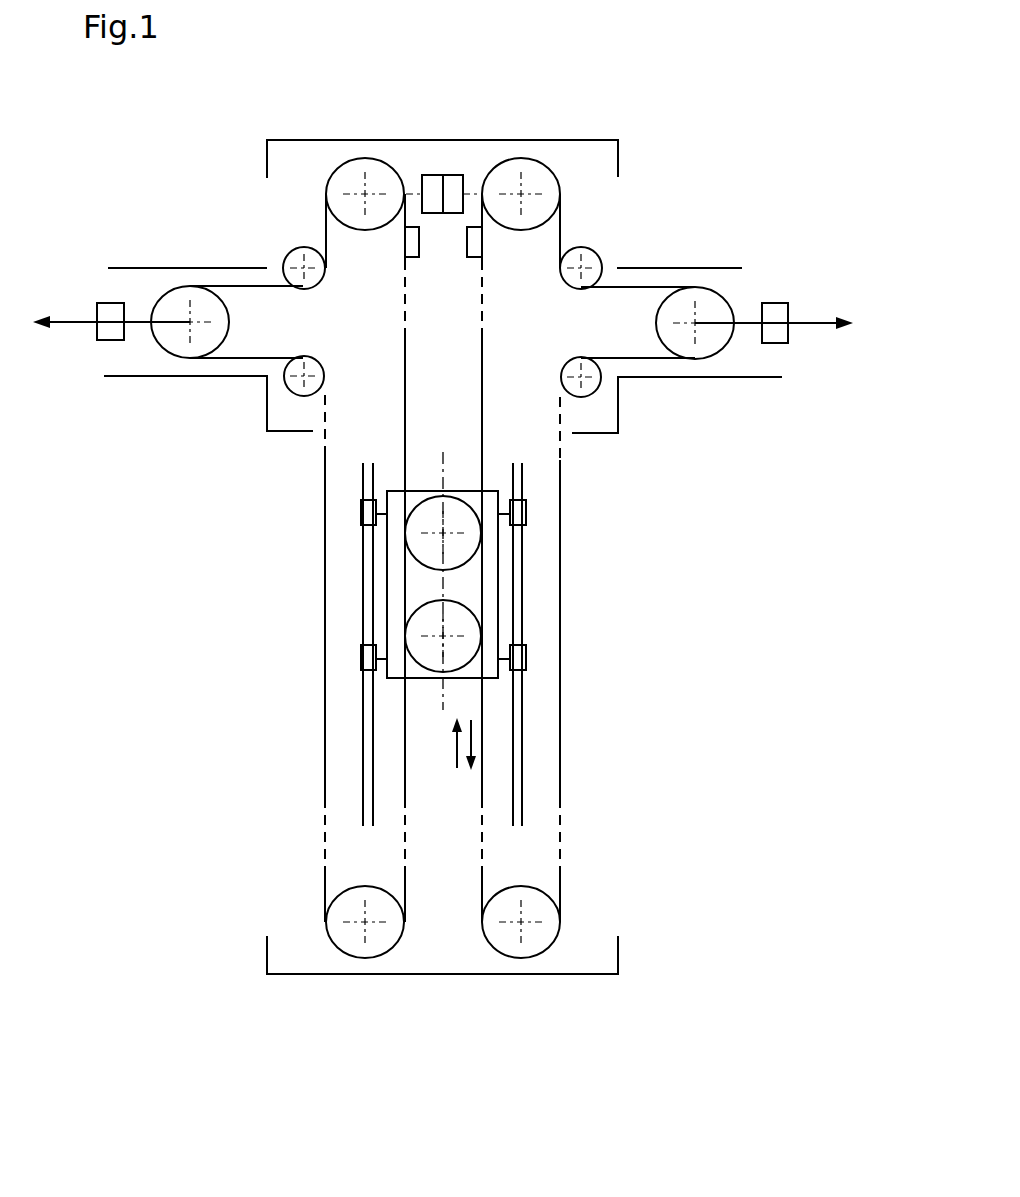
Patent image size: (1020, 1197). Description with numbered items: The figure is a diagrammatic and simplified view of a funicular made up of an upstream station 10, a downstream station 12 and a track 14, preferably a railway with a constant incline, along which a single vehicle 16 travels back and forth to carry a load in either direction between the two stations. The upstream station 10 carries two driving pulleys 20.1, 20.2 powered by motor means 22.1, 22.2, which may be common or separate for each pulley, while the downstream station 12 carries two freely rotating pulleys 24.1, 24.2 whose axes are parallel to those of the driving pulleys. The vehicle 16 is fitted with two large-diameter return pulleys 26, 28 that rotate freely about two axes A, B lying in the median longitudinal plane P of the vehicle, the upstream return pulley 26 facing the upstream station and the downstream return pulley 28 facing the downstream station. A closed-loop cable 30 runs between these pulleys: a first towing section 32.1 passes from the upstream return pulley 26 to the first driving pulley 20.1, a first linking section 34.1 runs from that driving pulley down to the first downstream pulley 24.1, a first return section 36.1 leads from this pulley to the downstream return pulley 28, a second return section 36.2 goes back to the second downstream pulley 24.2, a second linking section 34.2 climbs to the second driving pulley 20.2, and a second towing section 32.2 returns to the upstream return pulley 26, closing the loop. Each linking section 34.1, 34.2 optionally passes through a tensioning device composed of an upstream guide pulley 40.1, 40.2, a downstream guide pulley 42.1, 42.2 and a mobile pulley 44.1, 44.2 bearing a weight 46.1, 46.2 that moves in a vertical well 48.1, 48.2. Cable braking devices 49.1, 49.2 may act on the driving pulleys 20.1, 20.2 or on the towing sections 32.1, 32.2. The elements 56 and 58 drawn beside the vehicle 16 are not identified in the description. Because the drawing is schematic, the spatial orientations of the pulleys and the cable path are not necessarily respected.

The upstream station 10 is at (652, 140).
The downstream station 12 is at (620, 955).
The track 14 is at (436, 644).
The vehicle 16 is at (492, 630).
The first driving pulley 20.1 is at (537, 172).
The second driving pulley 20.2 is at (360, 172).
The motor means 22.1 is at (463, 173).
The motor means 22.2 is at (435, 175).
The first pulley of the downstream station 24.1 is at (523, 935).
The second pulley of the downstream station 24.2 is at (362, 938).
The upstream return pulley 26 is at (449, 537).
The downstream return pulley 28 is at (435, 627).
The closed-loop cable 30 is at (325, 226).
The first towing section 32.1 is at (482, 416).
The second towing section 32.2 is at (405, 432).
The first linking section 34.1 is at (562, 568).
The second linking section 34.2 is at (325, 710).
The first return section 36.1 is at (483, 708).
The second return section 36.2 is at (404, 739).
The upstream guide pulley 40.1 is at (587, 252).
The upstream guide pulley 40.2 is at (293, 265).
The downstream guide pulley 42.1 is at (587, 378).
The downstream guide pulley 42.2 is at (285, 389).
The mobile pulley 44.1 is at (707, 303).
The mobile pulley 44.2 is at (191, 355).
The weight 46.1 is at (786, 330).
The weight 46.2 is at (95, 303).
The vertical well 48.1 is at (708, 268).
The vertical well 48.2 is at (155, 266).
The cable braking device 49.1 is at (467, 238).
The cable braking device 49.2 is at (419, 238).
The first guide shoe 56 is at (552, 504).
The second guide shoe 58 is at (337, 661).
The axis A is at (442, 537).
The axis B is at (442, 637).
The median longitudinal plane P is at (445, 462).